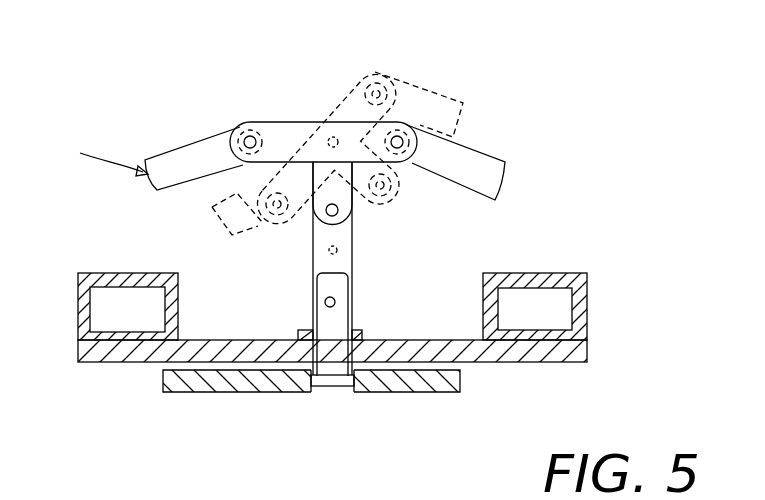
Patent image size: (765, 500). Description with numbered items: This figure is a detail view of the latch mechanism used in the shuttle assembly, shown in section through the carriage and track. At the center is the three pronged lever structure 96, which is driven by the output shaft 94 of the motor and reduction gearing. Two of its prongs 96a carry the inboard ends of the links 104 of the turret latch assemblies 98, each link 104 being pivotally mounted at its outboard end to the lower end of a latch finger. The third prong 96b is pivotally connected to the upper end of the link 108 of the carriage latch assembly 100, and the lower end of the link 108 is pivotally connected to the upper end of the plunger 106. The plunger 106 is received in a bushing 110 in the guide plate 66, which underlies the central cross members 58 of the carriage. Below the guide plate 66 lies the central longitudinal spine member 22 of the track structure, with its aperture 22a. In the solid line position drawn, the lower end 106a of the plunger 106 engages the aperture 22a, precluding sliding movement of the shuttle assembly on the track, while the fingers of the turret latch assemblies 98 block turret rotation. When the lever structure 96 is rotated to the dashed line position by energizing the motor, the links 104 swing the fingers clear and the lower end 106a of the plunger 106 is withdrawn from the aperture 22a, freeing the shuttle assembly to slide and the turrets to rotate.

The central longitudinal spine member 22 is at (177, 392).
The aperture 22a is at (343, 392).
The central cross members 58 is at (83, 278).
The guide plate 66 is at (548, 362).
The output shaft 94 is at (352, 225).
The three pronged lever structure 96 is at (300, 103).
The prong 96a is at (410, 118).
The prong 96b is at (352, 213).
The turret latch assembly 98 is at (95, 151).
The carriage latch assembly 100 is at (350, 272).
The link 104 is at (197, 150).
The plunger 106 is at (317, 287).
The lower end of plunger 106a is at (320, 393).
The link 108 is at (338, 252).
The bushing 110 is at (297, 347).